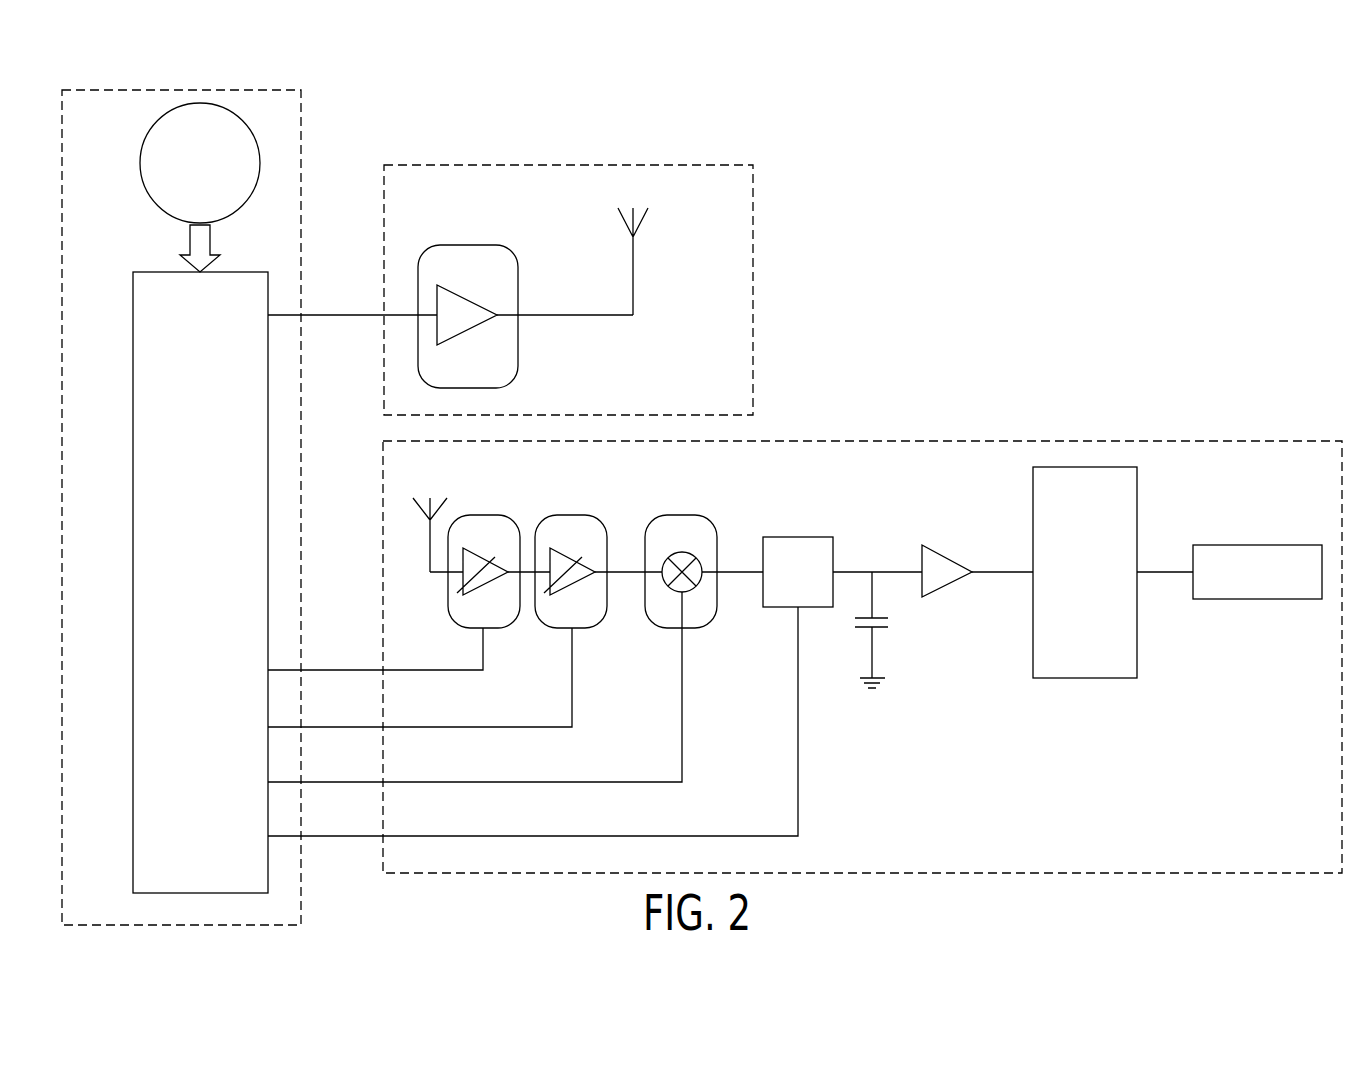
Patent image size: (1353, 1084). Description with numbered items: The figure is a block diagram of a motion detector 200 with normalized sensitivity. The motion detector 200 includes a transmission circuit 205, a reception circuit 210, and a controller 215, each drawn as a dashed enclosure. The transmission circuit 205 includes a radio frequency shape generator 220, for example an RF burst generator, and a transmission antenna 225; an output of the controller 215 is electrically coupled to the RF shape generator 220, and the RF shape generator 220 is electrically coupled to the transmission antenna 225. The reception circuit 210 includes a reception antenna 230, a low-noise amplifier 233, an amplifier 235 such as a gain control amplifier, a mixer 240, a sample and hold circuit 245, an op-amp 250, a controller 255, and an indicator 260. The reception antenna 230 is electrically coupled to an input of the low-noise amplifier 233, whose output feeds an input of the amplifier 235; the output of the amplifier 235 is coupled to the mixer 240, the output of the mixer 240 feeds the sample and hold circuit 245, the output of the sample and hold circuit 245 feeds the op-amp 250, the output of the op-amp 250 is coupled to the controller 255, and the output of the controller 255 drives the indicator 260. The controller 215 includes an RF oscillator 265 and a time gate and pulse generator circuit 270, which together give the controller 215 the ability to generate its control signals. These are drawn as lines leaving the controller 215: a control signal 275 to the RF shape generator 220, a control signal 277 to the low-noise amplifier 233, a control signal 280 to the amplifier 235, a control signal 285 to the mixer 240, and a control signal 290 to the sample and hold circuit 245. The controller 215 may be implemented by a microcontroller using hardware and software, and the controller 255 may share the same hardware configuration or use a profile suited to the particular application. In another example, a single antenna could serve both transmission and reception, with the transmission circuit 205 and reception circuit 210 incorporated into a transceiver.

The motion detector 200 is at (950, 285).
The transmission circuit 205 is at (753, 190).
The reception circuit 210 is at (1022, 441).
The controller 215 is at (301, 895).
The RF shape generator 220 is at (518, 356).
The transmission antenna 225 is at (642, 225).
The reception antenna 230 is at (427, 533).
The low-noise amplifier 233 is at (500, 515).
The amplifier 235 is at (590, 515).
The mixer 240 is at (692, 515).
The sample and hold circuit 245 is at (808, 537).
The op-amp 250 is at (945, 546).
The controller 255 is at (1082, 678).
The indicator 260 is at (1225, 545).
The RF oscillator 265 is at (150, 203).
The time gate and pulse generator circuit 270 is at (133, 343).
The control signal 275 is at (312, 305).
The control signal 277 is at (312, 660).
The control signal 280 is at (473, 718).
The control signal 285 is at (580, 775).
The control signal 290 is at (707, 825).